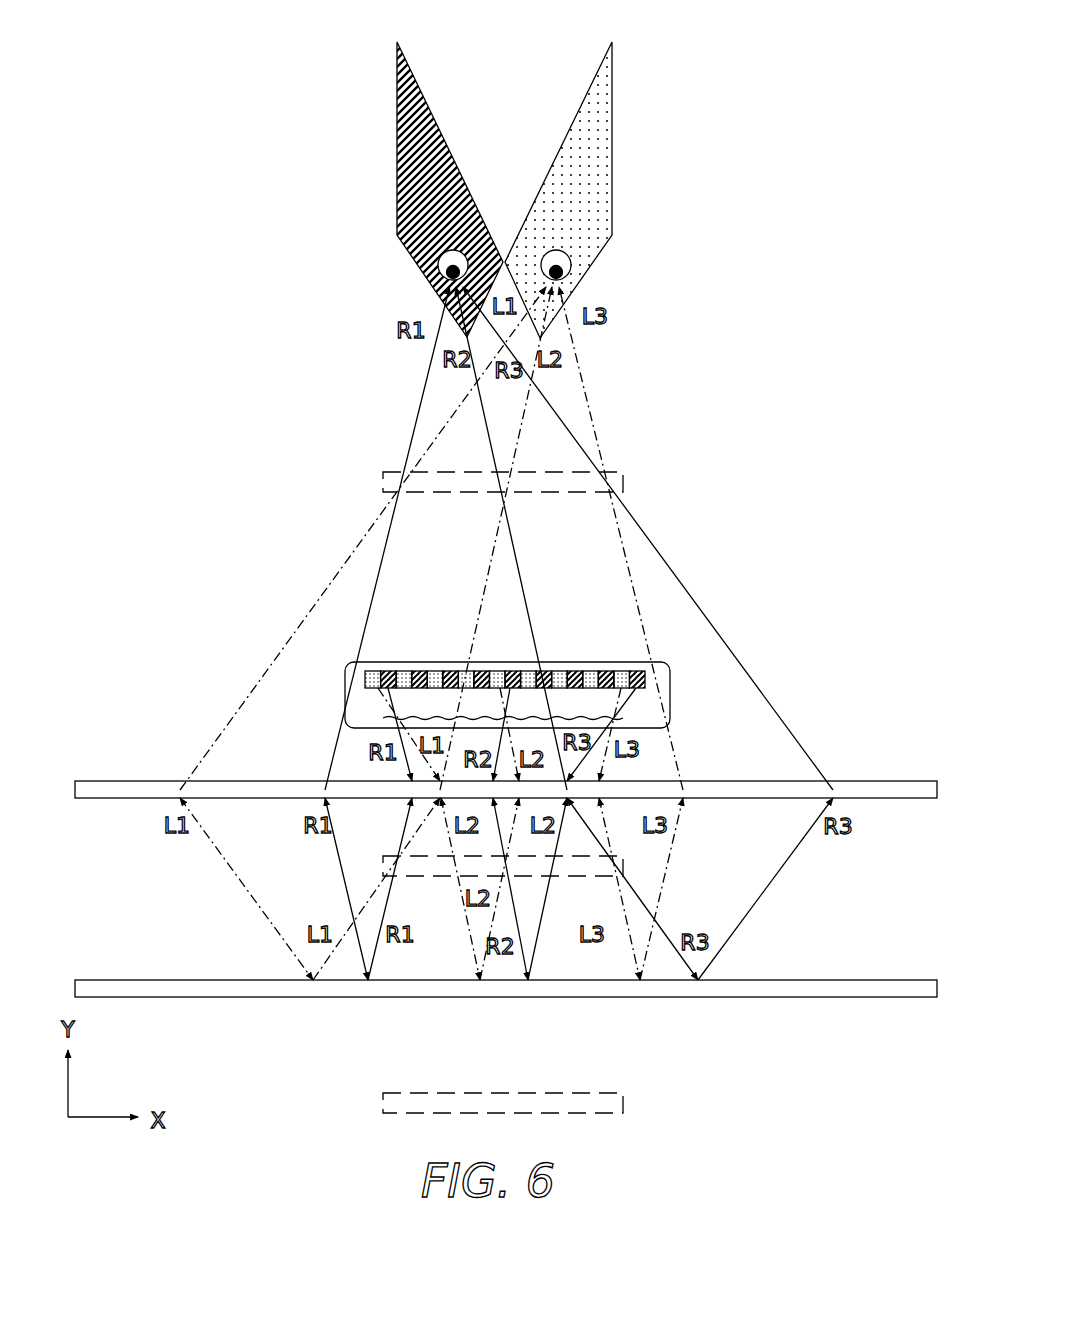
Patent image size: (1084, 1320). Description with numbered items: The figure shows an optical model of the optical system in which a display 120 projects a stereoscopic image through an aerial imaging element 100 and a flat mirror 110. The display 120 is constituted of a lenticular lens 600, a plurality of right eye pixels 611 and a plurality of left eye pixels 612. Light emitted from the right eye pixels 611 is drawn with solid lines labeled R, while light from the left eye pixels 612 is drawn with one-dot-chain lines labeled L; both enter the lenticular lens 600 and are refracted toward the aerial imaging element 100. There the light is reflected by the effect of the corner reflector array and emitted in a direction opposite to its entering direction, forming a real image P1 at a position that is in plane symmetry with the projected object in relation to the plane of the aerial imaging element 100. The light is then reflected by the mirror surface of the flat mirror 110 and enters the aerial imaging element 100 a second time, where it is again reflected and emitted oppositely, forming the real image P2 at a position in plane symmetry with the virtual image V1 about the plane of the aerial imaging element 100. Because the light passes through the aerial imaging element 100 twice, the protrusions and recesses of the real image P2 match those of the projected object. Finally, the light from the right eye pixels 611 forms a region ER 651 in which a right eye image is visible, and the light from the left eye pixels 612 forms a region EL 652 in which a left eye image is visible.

The aerial imaging element 100 is at (138, 780).
The flat mirror 110 is at (138, 980).
The display 120 is at (547, 652).
The lenticular lens 600 is at (537, 682).
The right eye pixels 611 is at (575, 671).
The left eye pixels 612 is at (593, 671).
The region ER 651 is at (396, 158).
The region EL 652 is at (611, 158).
The real image P1 is at (385, 857).
The real image P2 is at (622, 472).
The virtual image V1 is at (623, 1112).